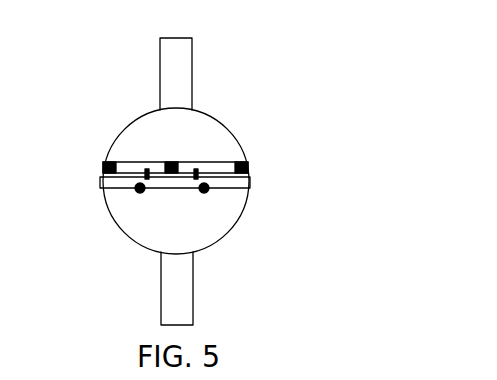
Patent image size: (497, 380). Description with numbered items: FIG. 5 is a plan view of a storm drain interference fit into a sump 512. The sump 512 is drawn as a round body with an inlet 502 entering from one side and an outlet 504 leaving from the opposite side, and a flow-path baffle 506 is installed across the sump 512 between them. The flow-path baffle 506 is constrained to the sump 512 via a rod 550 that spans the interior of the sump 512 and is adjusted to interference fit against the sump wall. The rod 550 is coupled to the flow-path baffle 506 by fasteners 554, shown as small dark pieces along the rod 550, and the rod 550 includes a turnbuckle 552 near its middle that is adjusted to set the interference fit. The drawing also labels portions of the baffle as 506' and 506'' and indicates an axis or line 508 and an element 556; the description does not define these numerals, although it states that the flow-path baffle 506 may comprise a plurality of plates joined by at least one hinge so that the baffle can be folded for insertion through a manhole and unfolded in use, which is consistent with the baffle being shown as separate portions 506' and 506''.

The inlet 502 is at (193, 288).
The outlet 504 is at (160, 54).
The flow-path baffle 506 is at (135, 190).
The first plate portion 506' is at (171, 210).
The second plate portion 506'' is at (251, 219).
The pivot axis 508 is at (161, 175).
The sump 512 is at (244, 162).
The rod 550 is at (143, 155).
The turnbuckle 552 is at (170, 162).
The fasteners 554 is at (196, 170).
The end hinge 556 is at (103, 160).